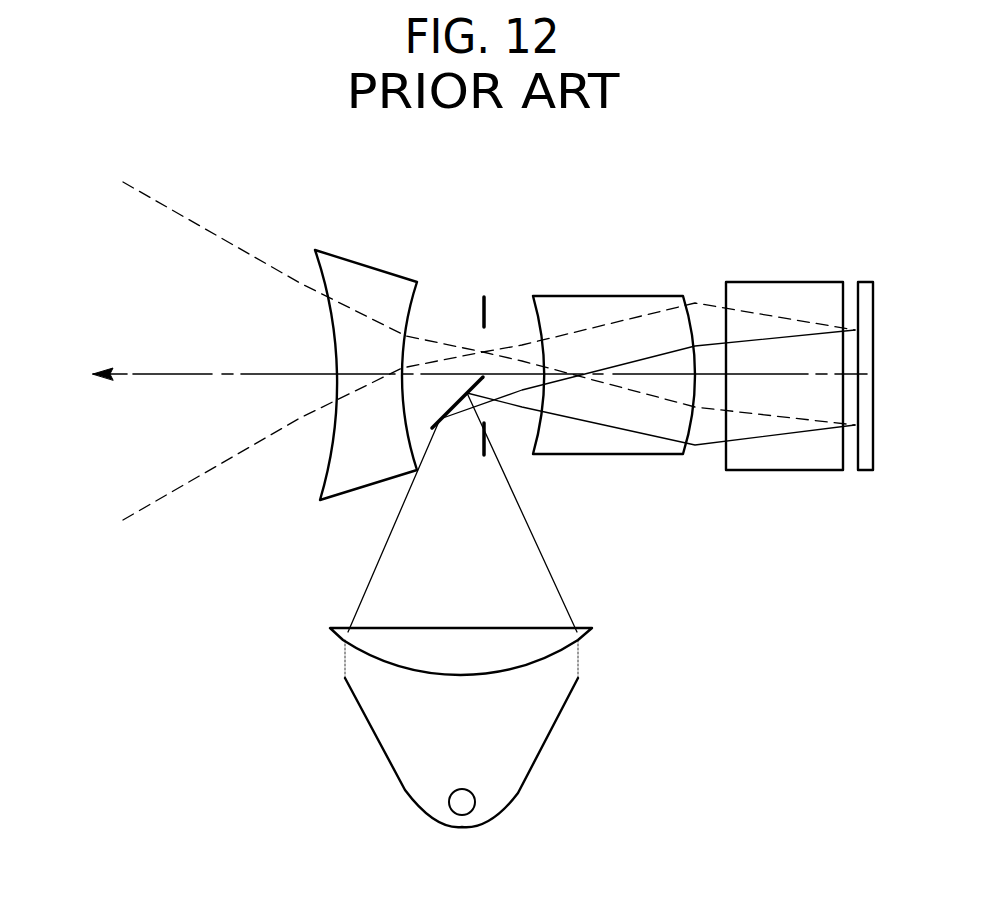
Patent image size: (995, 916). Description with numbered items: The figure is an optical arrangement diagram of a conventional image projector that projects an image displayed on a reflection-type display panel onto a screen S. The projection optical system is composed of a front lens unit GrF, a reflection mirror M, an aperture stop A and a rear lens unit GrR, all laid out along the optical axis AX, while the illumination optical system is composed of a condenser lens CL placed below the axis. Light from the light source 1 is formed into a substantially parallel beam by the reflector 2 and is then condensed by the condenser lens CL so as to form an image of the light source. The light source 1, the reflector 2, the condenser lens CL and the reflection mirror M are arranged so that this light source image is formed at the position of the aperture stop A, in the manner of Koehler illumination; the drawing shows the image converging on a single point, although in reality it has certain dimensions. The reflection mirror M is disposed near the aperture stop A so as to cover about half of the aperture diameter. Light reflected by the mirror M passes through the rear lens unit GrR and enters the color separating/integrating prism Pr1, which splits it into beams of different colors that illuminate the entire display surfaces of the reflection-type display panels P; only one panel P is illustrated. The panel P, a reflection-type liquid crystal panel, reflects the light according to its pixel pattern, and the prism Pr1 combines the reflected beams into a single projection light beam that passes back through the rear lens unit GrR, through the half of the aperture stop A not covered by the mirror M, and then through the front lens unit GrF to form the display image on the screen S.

The front lens unit GrF is at (353, 261).
The rear lens unit GrR is at (592, 295).
The aperture stop A is at (482, 310).
The reflection mirror M is at (467, 393).
The color separating/integrating prism Pr1 is at (777, 281).
The reflection-type display panel P is at (862, 281).
The screen S is at (93, 390).
The optical axis AX is at (168, 375).
The condenser lens CL is at (583, 628).
The reflector 2 is at (562, 718).
The light source 1 is at (465, 802).